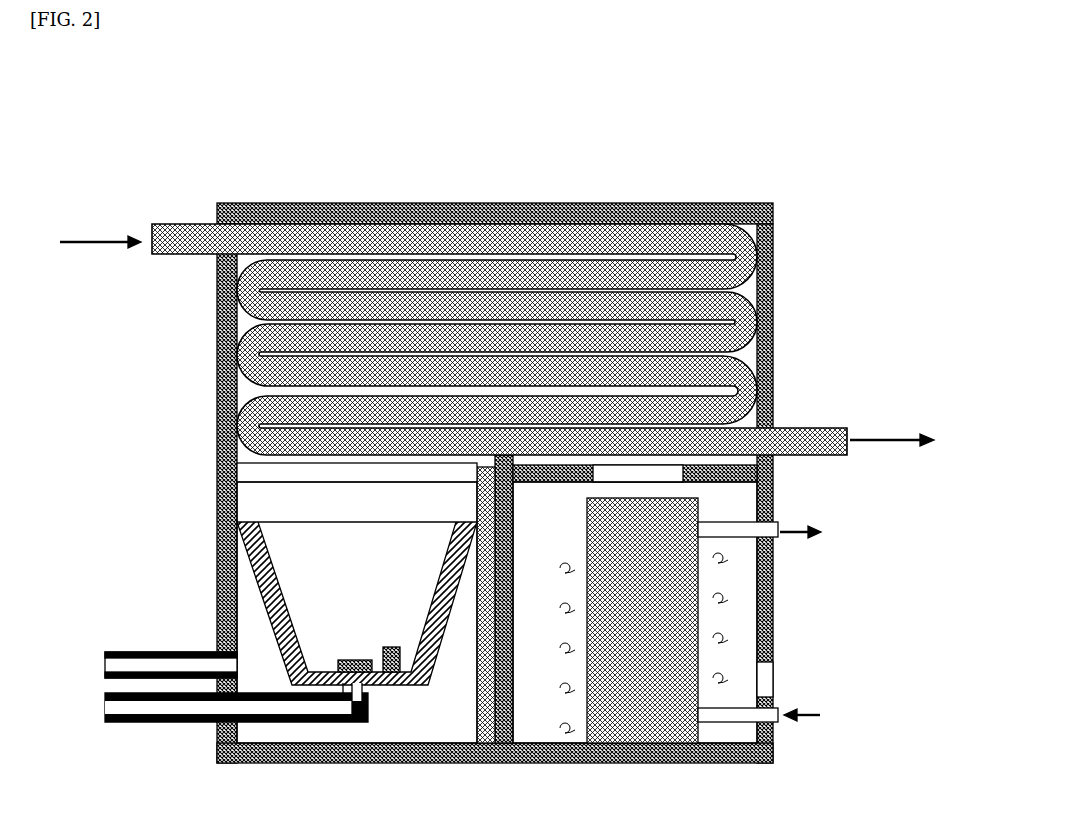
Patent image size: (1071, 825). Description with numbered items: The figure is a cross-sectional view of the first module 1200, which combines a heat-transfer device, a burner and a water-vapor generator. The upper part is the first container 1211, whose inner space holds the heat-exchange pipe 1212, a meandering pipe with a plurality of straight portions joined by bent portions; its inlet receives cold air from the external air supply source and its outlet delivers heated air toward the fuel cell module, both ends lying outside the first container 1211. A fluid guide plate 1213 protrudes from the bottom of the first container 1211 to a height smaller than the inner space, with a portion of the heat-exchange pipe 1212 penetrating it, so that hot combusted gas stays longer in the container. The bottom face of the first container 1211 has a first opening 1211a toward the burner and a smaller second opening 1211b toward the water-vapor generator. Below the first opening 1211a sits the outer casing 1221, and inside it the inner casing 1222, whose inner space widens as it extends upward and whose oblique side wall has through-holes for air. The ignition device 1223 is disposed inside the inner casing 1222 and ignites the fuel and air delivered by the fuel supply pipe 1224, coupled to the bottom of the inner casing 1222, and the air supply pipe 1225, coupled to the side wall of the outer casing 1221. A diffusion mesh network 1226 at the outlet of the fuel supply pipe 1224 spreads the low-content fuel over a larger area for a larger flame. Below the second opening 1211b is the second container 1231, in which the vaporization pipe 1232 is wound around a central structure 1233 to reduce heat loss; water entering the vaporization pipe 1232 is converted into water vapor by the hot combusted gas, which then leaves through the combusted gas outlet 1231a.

The first module 1200 is at (492, 429).
The first container 1211 is at (463, 203).
The first opening 1211a is at (355, 475).
The second opening 1211b is at (625, 477).
The heat-exchange pipe 1212 is at (530, 295).
The fluid guide plate 1213 is at (513, 450).
The outer casing 1221 is at (227, 552).
The inner casing 1222 is at (257, 590).
The ignition device 1223 is at (390, 645).
The fuel supply pipe 1224 is at (140, 700).
The air supply pipe 1225 is at (140, 653).
The diffusion mesh network 1226 is at (350, 660).
The second container 1231 is at (773, 560).
The combusted gas outlet 1231a is at (773, 680).
The vaporization pipe 1232 is at (700, 598).
The central structure 1233 is at (705, 648).